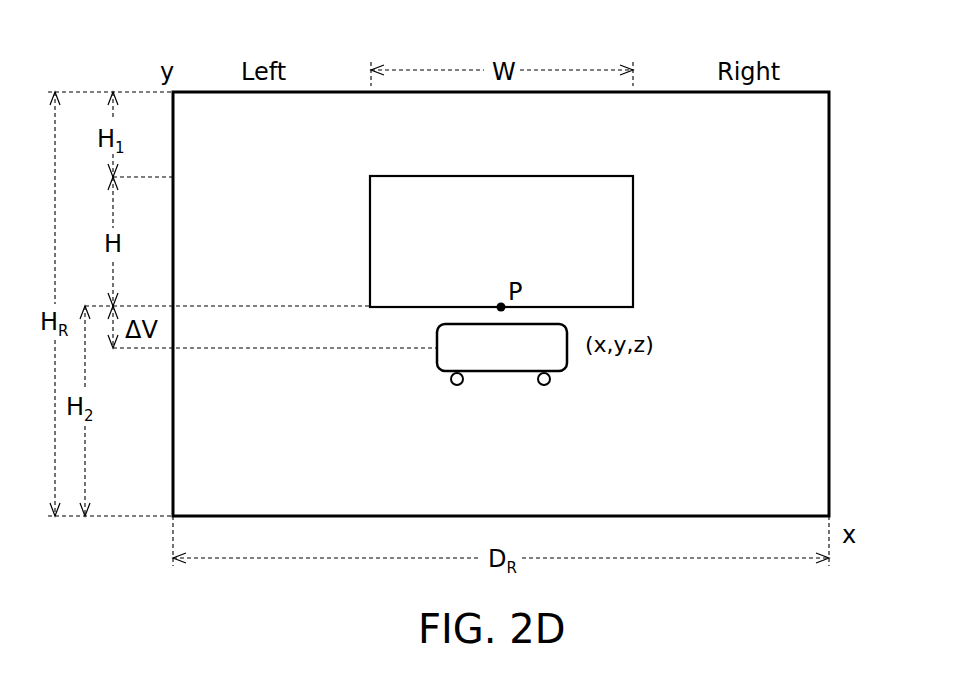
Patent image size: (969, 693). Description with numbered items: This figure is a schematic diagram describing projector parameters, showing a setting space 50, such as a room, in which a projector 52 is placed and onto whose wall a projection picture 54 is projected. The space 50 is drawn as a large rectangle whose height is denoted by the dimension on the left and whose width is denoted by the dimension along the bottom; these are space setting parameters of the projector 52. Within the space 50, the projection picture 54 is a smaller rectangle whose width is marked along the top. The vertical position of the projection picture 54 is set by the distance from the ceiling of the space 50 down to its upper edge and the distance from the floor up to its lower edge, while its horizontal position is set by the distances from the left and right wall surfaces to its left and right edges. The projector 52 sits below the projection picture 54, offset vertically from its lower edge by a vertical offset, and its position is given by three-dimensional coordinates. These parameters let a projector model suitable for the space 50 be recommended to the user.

The setting space 50 is at (829, 180).
The projection picture 54 is at (633, 242).
The projector 52 is at (500, 372).